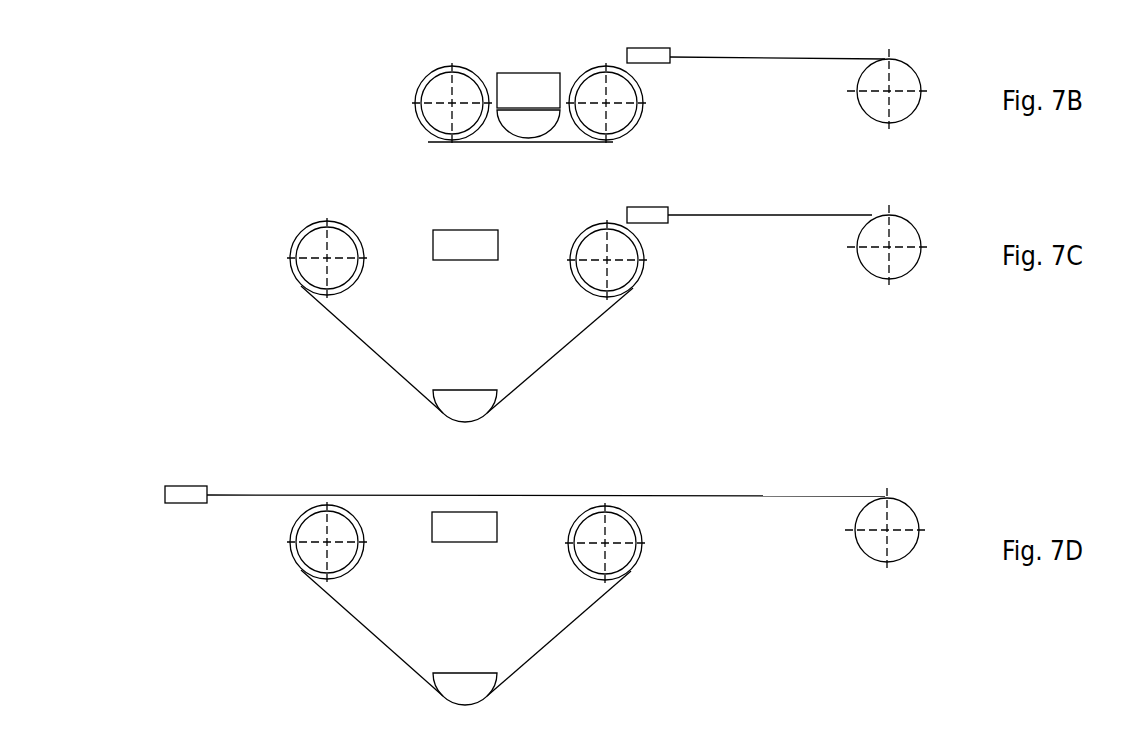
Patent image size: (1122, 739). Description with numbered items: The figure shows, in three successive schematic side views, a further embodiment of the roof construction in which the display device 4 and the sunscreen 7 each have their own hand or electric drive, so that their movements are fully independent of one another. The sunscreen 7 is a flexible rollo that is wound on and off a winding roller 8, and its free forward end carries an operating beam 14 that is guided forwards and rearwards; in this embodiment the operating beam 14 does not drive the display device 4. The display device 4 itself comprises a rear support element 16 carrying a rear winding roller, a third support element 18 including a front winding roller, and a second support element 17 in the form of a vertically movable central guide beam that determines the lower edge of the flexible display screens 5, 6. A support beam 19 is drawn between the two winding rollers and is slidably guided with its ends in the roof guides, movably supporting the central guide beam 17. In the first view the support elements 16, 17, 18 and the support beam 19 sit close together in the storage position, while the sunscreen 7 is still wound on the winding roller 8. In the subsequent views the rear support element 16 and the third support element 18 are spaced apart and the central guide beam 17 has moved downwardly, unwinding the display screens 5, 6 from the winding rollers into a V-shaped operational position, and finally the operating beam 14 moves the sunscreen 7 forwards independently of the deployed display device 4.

In FIG. 7D, the display device 4 is at (762, 634).
In FIG. 7C, the display screen 5 is at (577, 335).
In FIG. 7D, the display screen 5 is at (582, 612).
In FIG. 7C, the display screen 6 is at (358, 344).
In FIG. 7D, the display screen 6 is at (348, 617).
In FIG. 7B, the sunscreen 7 is at (830, 58).
In FIG. 7C, the sunscreen 7 is at (798, 215).
In FIG. 7D, the sunscreen 7 is at (727, 497).
In FIG. 7B, the winding roller 8 is at (907, 82).
In FIG. 7C, the winding roller 8 is at (907, 240).
In FIG. 7D, the winding roller 8 is at (900, 517).
In FIG. 7B, the operating beam 14 is at (665, 55).
In FIG. 7C, the operating beam 14 is at (658, 206).
In FIG. 7D, the operating beam 14 is at (188, 488).
In FIG. 7B, the rear support element 16 is at (593, 97).
In FIG. 7C, the rear support element 16 is at (607, 260).
In FIG. 7D, the rear support element 16 is at (615, 532).
In FIG. 7B, the second support element 17 is at (537, 120).
In FIG. 7C, the second support element 17 is at (485, 398).
In FIG. 7D, the second support element 17 is at (483, 682).
In FIG. 7B, the third support element 18 is at (437, 98).
In FIG. 7C, the third support element 18 is at (313, 247).
In FIG. 7D, the third support element 18 is at (315, 527).
In FIG. 7B, the support beam 19 is at (515, 88).
In FIG. 7C, the support beam 19 is at (470, 247).
In FIG. 7D, the support beam 19 is at (455, 527).